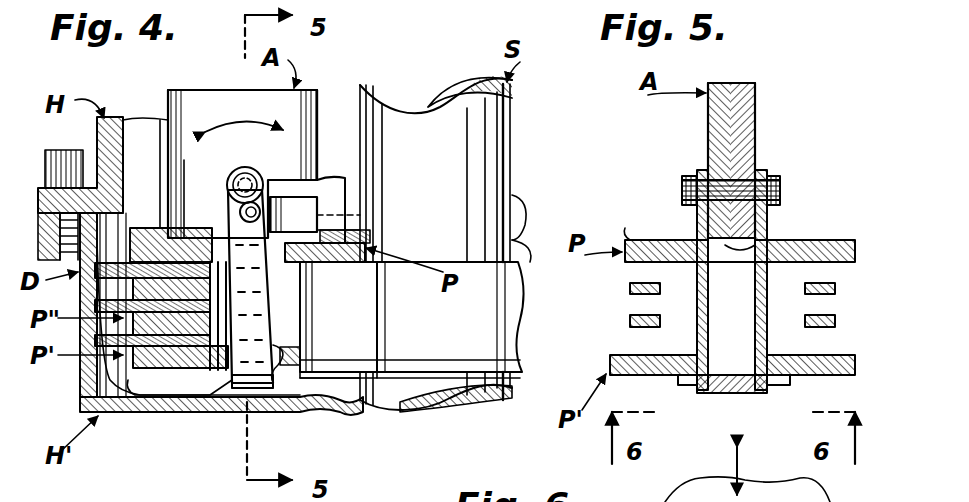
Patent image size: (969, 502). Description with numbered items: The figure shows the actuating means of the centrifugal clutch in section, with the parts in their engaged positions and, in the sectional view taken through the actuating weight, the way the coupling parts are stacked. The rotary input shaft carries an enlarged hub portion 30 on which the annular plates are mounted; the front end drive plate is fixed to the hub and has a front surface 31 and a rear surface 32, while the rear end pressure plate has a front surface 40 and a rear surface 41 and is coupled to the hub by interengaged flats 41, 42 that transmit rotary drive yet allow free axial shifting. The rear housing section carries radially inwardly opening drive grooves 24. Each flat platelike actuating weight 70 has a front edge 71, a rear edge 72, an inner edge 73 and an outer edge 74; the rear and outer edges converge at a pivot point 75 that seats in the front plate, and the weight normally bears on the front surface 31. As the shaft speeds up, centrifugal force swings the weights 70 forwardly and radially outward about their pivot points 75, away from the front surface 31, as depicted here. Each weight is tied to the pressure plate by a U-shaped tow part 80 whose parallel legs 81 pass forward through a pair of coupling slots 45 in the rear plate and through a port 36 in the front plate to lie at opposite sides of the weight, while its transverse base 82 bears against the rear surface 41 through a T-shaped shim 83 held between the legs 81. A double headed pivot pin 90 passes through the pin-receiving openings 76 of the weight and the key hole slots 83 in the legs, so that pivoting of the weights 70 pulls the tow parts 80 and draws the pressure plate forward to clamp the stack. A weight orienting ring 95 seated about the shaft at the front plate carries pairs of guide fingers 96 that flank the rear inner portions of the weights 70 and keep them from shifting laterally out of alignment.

In FIG. 4, the drive grooves 24 is at (92, 382).
In FIG. 4, the hub portion 30 is at (460, 320).
In FIG. 4, the front surface 31 is at (530, 218).
In FIG. 5, the front surface 31 is at (638, 236).
In FIG. 4, the rear surface 32 is at (522, 270).
In FIG. 5, the rear surface 32 is at (640, 264).
In FIG. 4, the ports 36 is at (295, 275).
In FIG. 5, the ports 36 is at (698, 238).
In FIG. 5, the front surface 40 is at (610, 360).
In FIG. 4, the rear surface 41 is at (305, 362).
In FIG. 5, the rear surface 41 is at (800, 380).
In FIG. 4, the flats 42 is at (398, 368).
In FIG. 4, the coupling slots 45 is at (236, 378).
In FIG. 5, the coupling slots 45 is at (725, 355).
In FIG. 4, the actuating weights 70 is at (190, 98).
In FIG. 5, the actuating weights 70 is at (760, 95).
In FIG. 4, the front edge 71 is at (246, 90).
In FIG. 5, the front edge 71 is at (748, 84).
In FIG. 4, the rear edge 72 is at (306, 258).
In FIG. 5, the rear edge 72 is at (752, 250).
In FIG. 4, the inner edge 73 is at (320, 92).
In FIG. 4, the outer edge 74 is at (168, 100).
In FIG. 4, the pivot points 75 is at (180, 238).
In FIG. 4, the pin-receiving openings 76 is at (300, 175).
In FIG. 5, the pin-receiving openings 76 is at (766, 176).
In FIG. 4, the tow parts 80 is at (266, 312).
In FIG. 5, the tow parts 80 is at (698, 180).
In FIG. 5, the legs 81 is at (695, 335).
In FIG. 4, the bases 82 is at (258, 390).
In FIG. 5, the bases 82 is at (728, 393).
In FIG. 4, the shims 83 is at (272, 205).
In FIG. 5, the shims 83 is at (770, 224).
In FIG. 4, the pivot pins 90 is at (270, 162).
In FIG. 5, the pivot pins 90 is at (780, 190).
In FIG. 4, the weight orienting ring 95 is at (340, 242).
In FIG. 4, the guide fingers 96 is at (330, 216).